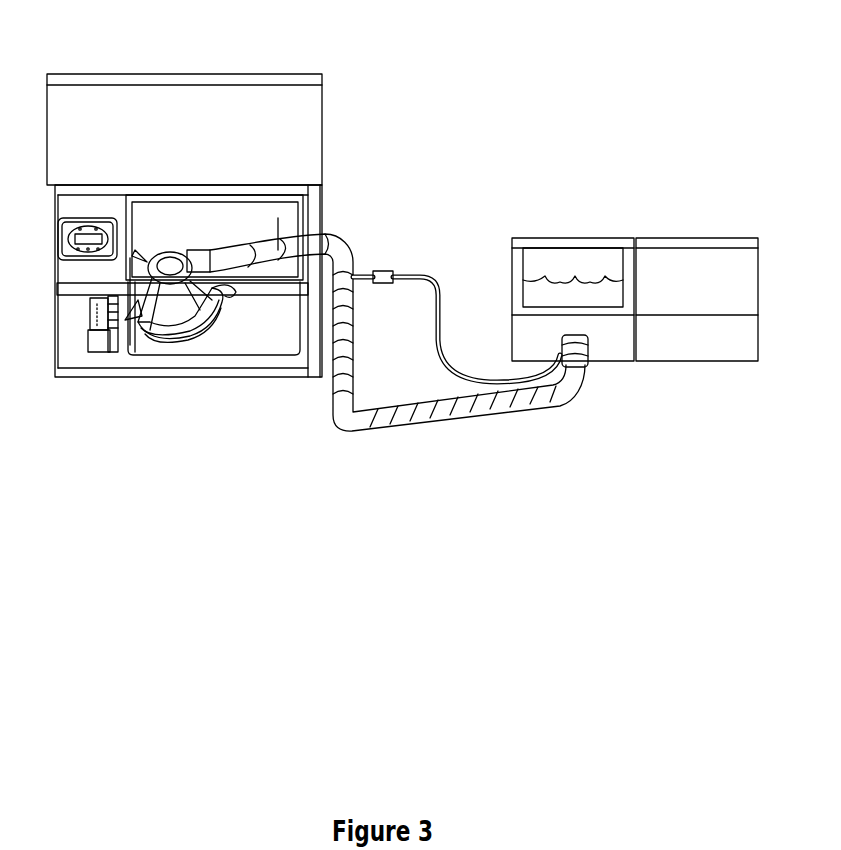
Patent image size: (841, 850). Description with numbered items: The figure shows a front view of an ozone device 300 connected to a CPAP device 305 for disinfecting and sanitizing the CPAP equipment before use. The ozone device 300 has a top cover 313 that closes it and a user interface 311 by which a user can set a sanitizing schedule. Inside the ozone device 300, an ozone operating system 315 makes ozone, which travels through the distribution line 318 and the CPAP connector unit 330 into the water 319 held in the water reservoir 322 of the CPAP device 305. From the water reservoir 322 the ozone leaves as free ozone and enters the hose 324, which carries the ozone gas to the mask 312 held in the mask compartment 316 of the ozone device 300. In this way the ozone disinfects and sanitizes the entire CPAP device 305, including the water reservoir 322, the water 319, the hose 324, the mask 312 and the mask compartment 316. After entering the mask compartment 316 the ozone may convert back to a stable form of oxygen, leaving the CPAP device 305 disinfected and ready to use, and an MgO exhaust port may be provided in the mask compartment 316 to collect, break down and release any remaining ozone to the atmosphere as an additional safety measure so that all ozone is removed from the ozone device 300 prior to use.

The ozone device 300 is at (174, 263).
The CPAP device 305 is at (679, 375).
The user interface 311 is at (60, 236).
The mask 312 is at (110, 332).
The top cover 313 is at (182, 158).
The ozone operating system 315 is at (88, 330).
The mask compartment 316 is at (235, 333).
The distribution line 318 is at (415, 280).
The water 319 is at (601, 292).
The water reservoir 322 is at (577, 266).
The hose 324 is at (428, 410).
The CPAP connector unit 330 is at (583, 366).